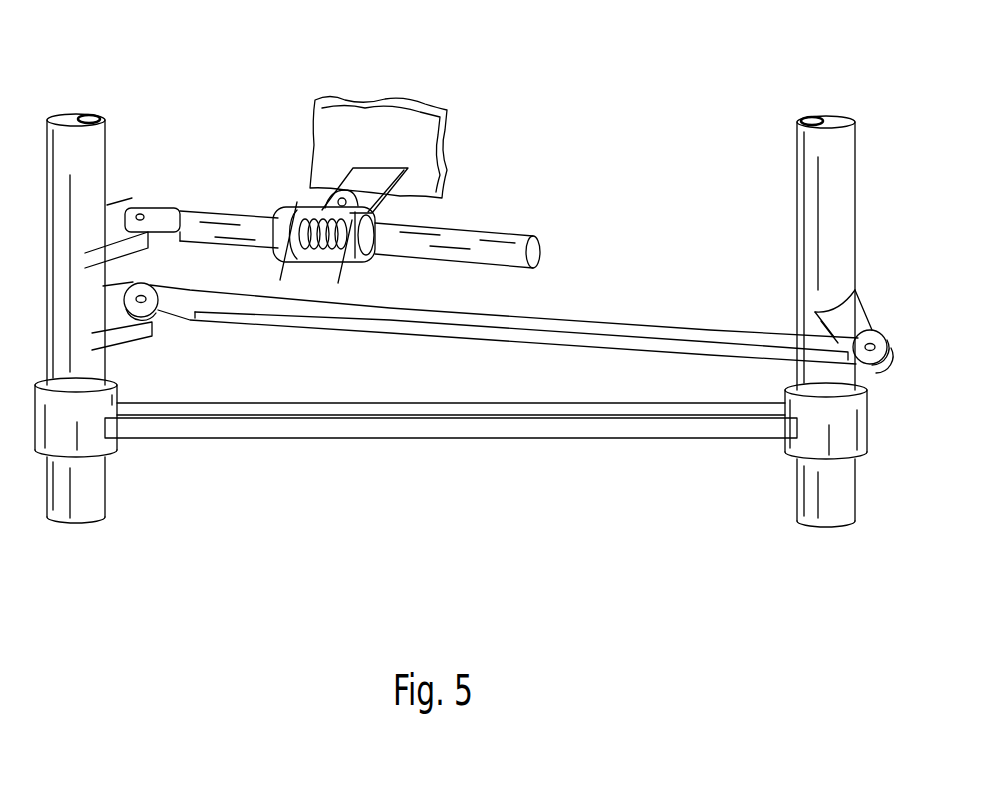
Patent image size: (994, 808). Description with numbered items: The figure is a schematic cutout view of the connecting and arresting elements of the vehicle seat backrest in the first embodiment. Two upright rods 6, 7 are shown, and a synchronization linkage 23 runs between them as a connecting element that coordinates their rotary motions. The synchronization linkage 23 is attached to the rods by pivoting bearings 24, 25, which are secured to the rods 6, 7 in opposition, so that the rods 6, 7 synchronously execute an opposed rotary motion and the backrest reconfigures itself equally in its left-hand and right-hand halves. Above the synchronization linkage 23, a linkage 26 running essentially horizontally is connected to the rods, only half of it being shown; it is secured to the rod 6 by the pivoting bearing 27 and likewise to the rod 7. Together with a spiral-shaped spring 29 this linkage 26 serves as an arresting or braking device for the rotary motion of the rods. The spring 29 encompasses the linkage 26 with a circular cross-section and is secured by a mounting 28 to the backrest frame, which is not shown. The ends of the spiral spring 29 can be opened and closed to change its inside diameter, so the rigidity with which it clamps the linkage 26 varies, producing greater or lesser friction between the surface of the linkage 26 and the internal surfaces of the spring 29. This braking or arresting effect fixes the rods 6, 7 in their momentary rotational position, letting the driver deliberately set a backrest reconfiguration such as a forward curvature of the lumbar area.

The rod 6 is at (66, 136).
The rod 7 is at (832, 140).
The synchronization linkage 23 is at (593, 326).
The pivoting bearing 24 is at (144, 303).
The pivoting bearing 25 is at (874, 343).
The linkage 26 is at (498, 248).
The pivoting bearing 27 is at (142, 214).
The mounting 28 is at (413, 132).
The spiral-shaped spring 29 is at (296, 208).